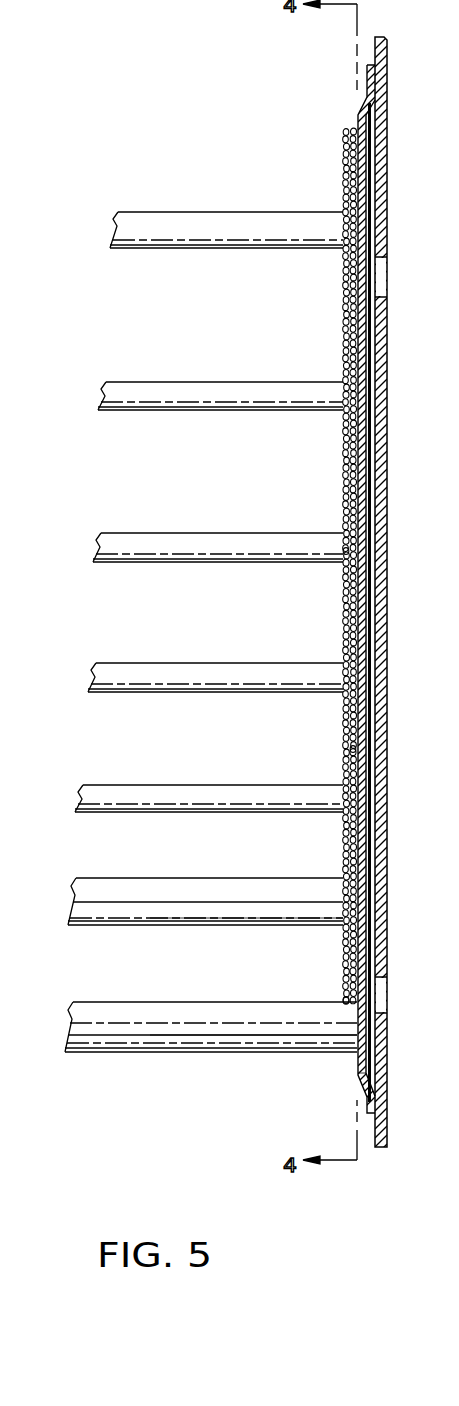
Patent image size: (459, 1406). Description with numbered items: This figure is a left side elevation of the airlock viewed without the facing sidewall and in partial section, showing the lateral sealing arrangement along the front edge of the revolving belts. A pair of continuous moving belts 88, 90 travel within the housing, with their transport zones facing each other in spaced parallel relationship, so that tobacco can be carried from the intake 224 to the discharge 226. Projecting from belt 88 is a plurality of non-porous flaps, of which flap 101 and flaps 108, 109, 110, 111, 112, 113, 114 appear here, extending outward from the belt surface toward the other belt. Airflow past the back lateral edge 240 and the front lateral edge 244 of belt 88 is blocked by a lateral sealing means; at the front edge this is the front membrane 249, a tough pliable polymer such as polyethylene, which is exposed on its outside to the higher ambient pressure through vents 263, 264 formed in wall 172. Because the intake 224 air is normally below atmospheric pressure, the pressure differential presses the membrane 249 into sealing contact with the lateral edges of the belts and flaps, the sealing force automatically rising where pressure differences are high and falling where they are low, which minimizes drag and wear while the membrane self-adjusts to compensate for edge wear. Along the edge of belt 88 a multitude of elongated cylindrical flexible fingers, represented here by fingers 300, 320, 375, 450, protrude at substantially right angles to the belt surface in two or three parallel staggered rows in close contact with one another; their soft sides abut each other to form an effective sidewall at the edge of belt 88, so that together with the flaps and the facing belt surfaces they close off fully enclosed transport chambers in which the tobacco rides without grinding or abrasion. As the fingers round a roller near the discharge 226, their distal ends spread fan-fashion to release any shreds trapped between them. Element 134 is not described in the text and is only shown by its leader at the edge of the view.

The belt 88 is at (302, 918).
The belt 90 is at (280, 1033).
The flap 101 is at (234, 186).
The flap 108 is at (165, 987).
The flap 109 is at (195, 887).
The flap 110 is at (202, 802).
The flap 111 is at (200, 682).
The flap 112 is at (197, 548).
The flap 113 is at (208, 400).
The flap 114 is at (222, 237).
The housing wall 134 is at (458, 453).
The wall 172 is at (383, 630).
The intake 224 is at (197, 128).
The discharge 226 is at (210, 1085).
The back lateral edge 240 is at (338, 553).
The front lateral edge 244 is at (350, 748).
The front membrane 249 is at (367, 848).
The vent 263 is at (383, 278).
The vent 264 is at (383, 1000).
The flexible finger 300 is at (345, 1003).
The flexible finger 320 is at (458, 908).
The flexible finger 375 is at (348, 130).
The flexible finger 450 is at (363, 1020).